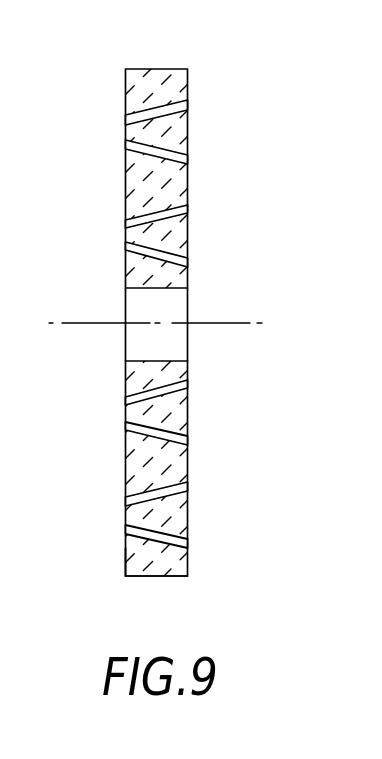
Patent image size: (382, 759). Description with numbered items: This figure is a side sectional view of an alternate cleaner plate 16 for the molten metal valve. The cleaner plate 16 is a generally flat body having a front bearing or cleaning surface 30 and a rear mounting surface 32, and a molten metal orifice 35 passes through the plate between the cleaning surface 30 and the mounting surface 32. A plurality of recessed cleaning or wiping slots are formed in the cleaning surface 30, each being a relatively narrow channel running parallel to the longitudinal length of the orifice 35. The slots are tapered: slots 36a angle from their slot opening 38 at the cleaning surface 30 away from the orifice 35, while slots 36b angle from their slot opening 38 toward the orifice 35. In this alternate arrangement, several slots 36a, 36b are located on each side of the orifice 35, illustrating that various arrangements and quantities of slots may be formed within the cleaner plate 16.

The cleaner plate 16 is at (180, 79).
The front bearing or cleaning surface 30 is at (188, 563).
The rear mounting surface 32 is at (125, 547).
The molten metal orifice 35 is at (178, 305).
The cleaning slot 36a is at (126, 140).
The cleaning slot 36b is at (124, 118).
The slot opening 38 is at (153, 306).